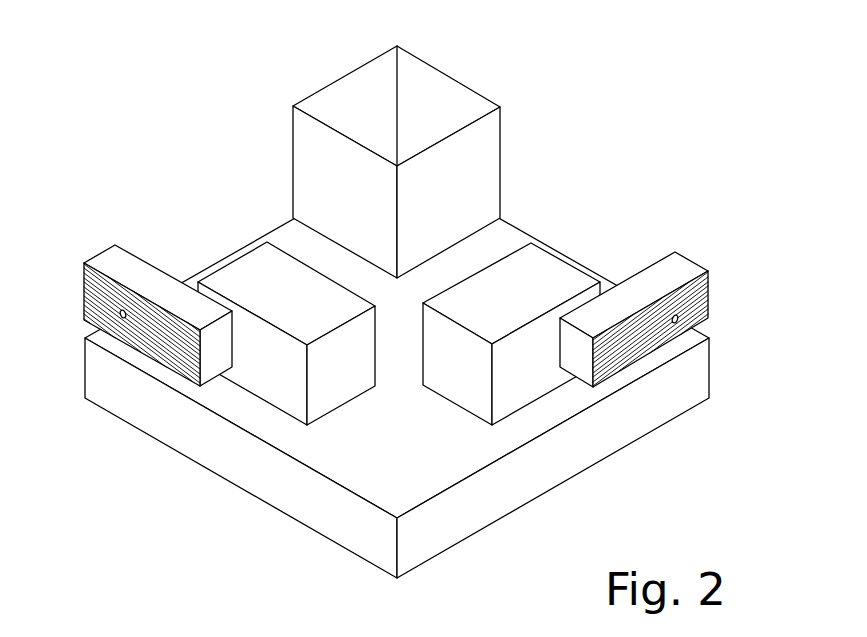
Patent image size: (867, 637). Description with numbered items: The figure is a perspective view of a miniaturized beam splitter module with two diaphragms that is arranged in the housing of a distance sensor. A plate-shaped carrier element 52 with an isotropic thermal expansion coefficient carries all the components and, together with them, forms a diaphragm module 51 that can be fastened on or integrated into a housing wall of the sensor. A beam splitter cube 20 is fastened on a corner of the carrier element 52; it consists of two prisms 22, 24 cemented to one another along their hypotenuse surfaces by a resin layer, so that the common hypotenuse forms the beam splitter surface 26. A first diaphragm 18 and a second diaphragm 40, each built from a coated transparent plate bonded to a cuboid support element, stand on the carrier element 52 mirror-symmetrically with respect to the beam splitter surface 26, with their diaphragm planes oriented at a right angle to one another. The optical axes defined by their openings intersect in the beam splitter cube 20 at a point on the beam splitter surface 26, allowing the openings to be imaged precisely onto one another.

The first diaphragm 18 is at (137, 259).
The beam splitter cube 20 is at (396, 144).
The prism 22 is at (303, 155).
The prism 24 is at (490, 162).
The beam splitter surface 26 is at (398, 78).
The second diaphragm 40 is at (679, 261).
The diaphragm module 51 is at (618, 135).
The carrier element 52 is at (672, 395).